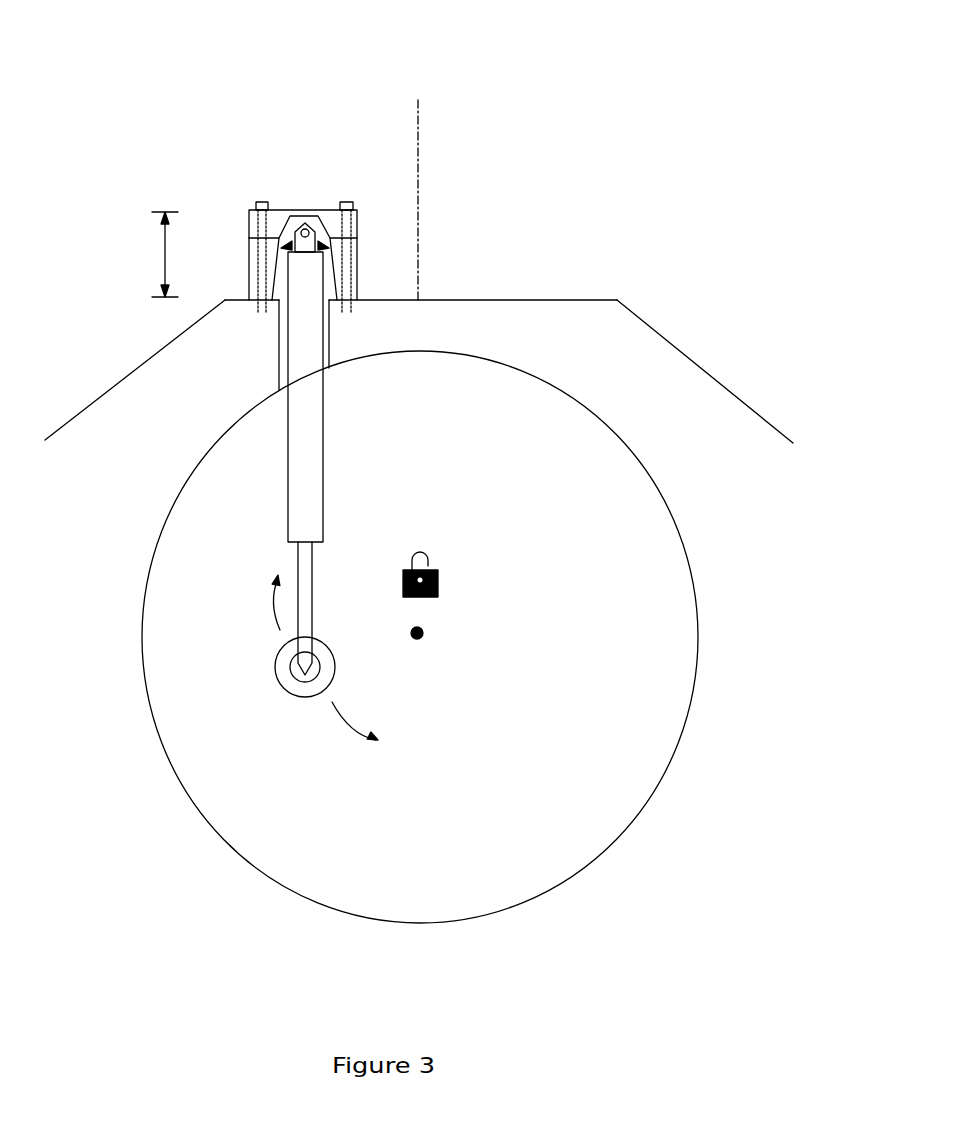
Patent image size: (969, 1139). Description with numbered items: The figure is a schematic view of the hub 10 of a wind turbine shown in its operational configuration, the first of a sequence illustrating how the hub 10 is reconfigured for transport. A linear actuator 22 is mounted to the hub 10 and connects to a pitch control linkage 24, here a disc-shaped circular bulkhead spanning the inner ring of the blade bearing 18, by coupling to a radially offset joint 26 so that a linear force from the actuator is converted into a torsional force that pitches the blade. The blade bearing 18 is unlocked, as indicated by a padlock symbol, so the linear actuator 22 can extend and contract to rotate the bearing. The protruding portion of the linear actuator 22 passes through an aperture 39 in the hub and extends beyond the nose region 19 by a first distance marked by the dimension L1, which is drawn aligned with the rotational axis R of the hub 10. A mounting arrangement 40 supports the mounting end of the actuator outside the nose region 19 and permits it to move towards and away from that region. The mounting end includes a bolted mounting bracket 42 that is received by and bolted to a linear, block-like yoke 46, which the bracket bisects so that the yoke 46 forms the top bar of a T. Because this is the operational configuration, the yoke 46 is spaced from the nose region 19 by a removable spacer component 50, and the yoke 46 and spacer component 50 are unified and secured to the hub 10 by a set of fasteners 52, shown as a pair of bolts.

The hub 10 is at (703, 408).
The blade bearing 18 is at (682, 538).
The nose region 19 is at (560, 298).
The linear actuator 22 is at (283, 454).
The pitch control linkage 24 is at (640, 693).
The radially offset joint 26 is at (288, 670).
The aperture 39 is at (335, 342).
The mounting arrangement 40 is at (88, 96).
The mounting bracket 42 is at (299, 247).
The yoke 46 is at (302, 208).
The spacer component 50 is at (353, 265).
The fasteners 52 is at (258, 201).
The rotational axis R is at (418, 107).
The dimension L1 is at (150, 254).